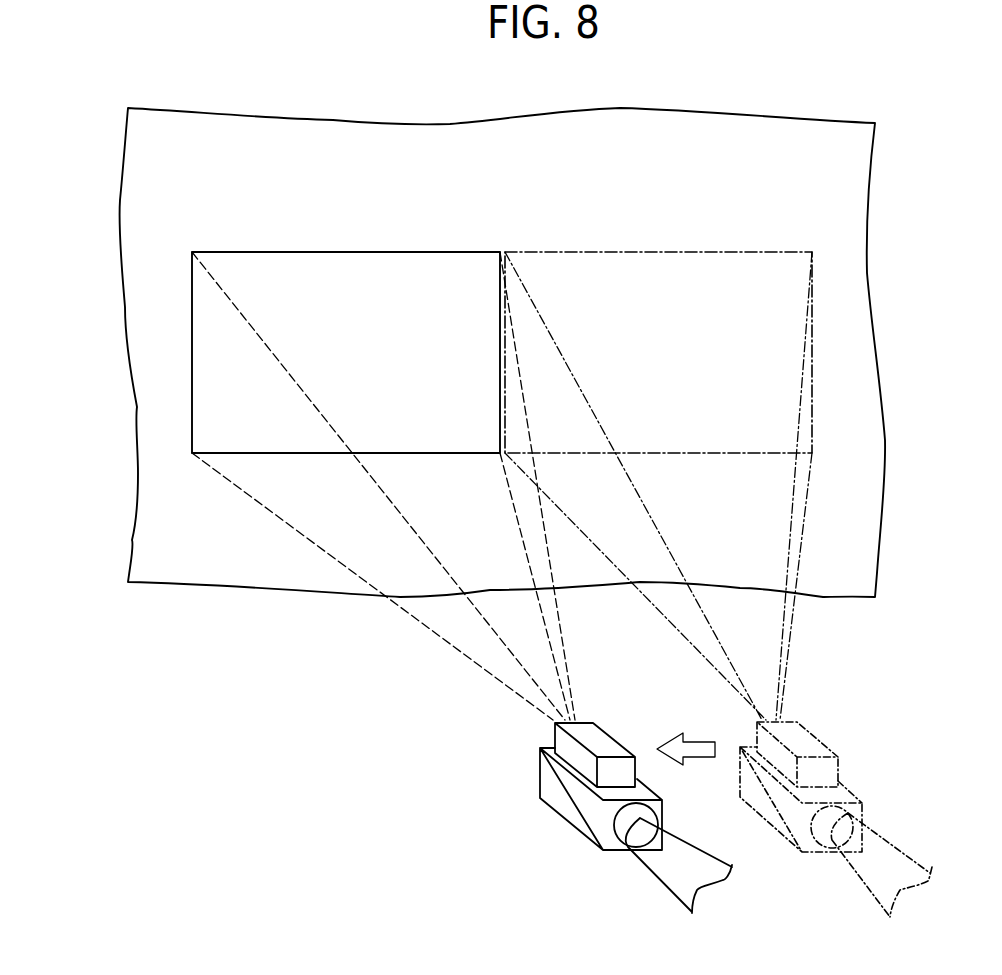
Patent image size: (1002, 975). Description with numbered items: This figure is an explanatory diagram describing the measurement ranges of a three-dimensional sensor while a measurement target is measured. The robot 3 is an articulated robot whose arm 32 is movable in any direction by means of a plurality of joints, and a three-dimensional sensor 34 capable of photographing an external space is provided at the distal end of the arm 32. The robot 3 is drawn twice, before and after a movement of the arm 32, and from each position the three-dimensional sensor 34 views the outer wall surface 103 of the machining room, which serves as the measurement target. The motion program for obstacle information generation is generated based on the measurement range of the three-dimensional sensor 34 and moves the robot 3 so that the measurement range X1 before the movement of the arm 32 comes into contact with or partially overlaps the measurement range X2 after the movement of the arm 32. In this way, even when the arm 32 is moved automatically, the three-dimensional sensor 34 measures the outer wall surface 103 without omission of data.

The outer wall surface 103 is at (852, 172).
The measurement range before movement X1 is at (607, 252).
The measurement range after movement X2 is at (292, 252).
The robot 3 is at (555, 818).
The three-dimensional sensor 34 is at (558, 737).
The arm 32 is at (663, 862).